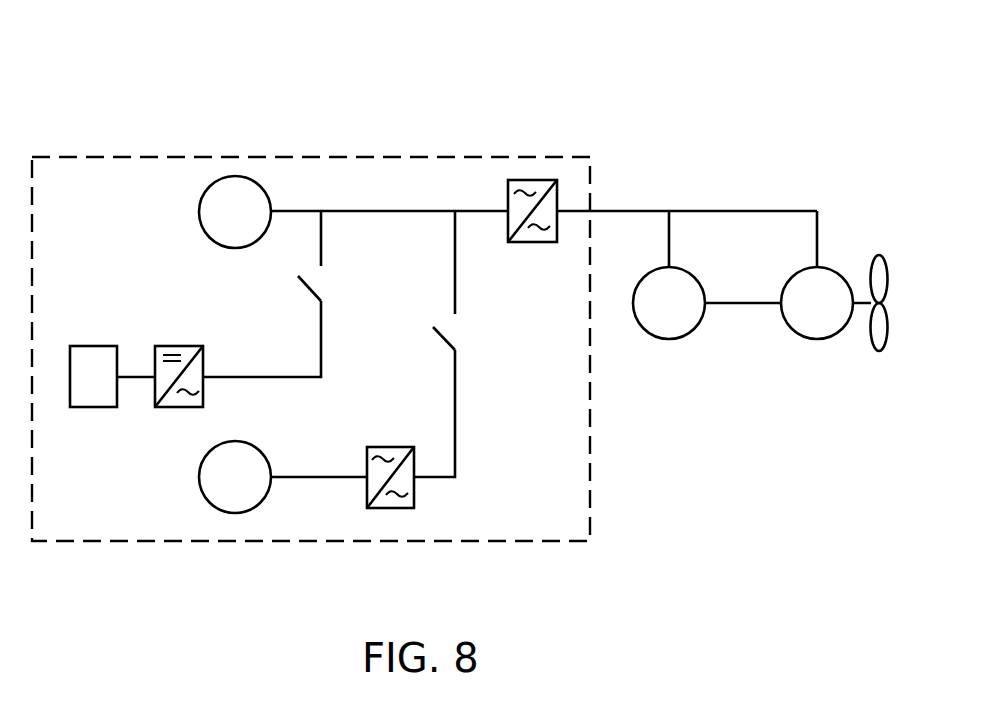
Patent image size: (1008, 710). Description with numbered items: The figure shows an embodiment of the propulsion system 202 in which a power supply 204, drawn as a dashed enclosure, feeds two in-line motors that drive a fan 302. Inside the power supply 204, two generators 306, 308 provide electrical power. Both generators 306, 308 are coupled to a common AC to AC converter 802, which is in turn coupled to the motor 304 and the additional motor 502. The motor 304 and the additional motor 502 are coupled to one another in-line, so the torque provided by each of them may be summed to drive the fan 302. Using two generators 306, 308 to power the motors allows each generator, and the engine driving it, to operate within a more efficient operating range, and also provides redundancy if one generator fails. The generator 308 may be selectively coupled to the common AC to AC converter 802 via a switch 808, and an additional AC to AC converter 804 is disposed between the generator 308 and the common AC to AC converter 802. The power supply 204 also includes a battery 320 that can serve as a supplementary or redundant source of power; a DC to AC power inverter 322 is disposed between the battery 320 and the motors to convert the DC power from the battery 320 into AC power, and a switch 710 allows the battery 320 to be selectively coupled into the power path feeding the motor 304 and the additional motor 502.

The propulsion system 202 is at (675, 70).
The power supply 204 is at (149, 156).
The fan 302 is at (877, 352).
The motor 304 is at (817, 340).
The generator 306 is at (239, 176).
The generator 308 is at (236, 513).
The battery 320 is at (92, 346).
The DC to AC power inverter 322 is at (178, 346).
The additional motor 502 is at (669, 340).
The switch 710 is at (299, 290).
The common AC to AC converter 802 is at (531, 180).
The additional AC to AC converter 804 is at (391, 508).
The switch 808 is at (433, 342).